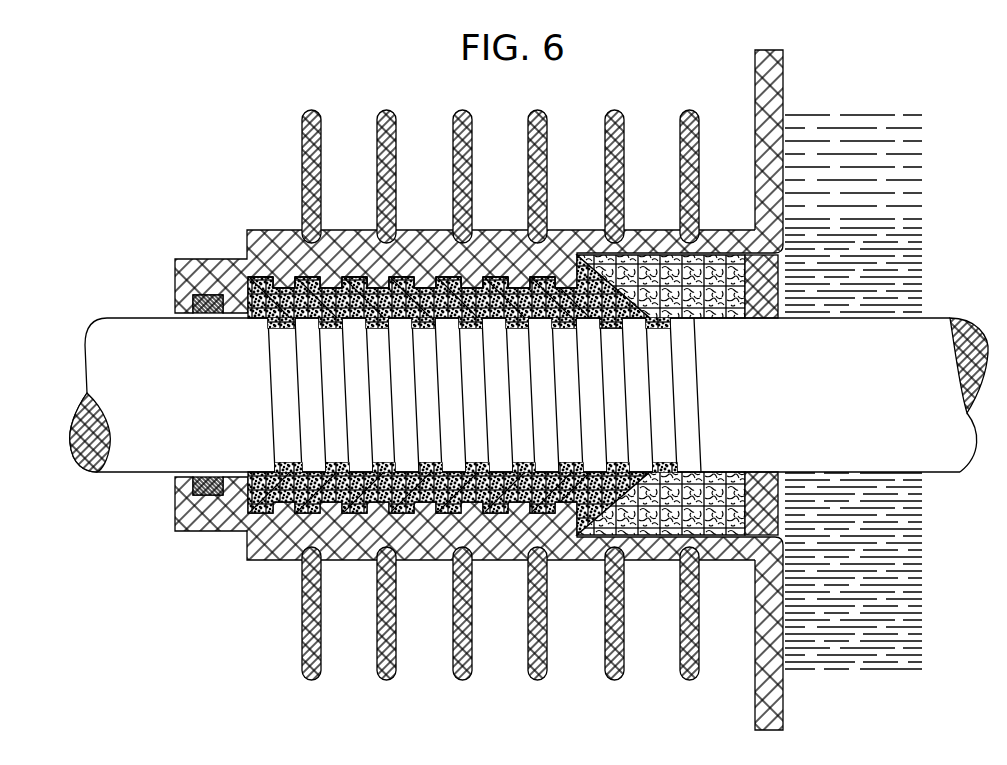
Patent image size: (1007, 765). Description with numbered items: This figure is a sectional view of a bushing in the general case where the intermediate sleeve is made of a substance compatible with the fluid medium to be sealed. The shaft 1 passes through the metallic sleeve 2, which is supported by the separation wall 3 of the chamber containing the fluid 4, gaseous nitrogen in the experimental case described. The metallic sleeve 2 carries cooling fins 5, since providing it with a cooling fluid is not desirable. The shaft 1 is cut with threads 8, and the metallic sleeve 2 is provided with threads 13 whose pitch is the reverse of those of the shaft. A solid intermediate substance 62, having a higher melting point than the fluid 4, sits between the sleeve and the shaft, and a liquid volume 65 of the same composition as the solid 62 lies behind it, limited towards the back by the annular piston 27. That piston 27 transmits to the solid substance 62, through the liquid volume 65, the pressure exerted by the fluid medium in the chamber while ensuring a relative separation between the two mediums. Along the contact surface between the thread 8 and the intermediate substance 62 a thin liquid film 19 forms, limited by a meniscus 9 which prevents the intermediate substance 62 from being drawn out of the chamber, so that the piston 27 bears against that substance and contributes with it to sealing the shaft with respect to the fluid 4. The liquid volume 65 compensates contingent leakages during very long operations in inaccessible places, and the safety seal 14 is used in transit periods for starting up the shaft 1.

The shaft 1 is at (911, 358).
The metallic sleeve 2 is at (655, 247).
The separation wall 3 is at (768, 112).
The fluid 4 is at (878, 170).
The cooling fins 5 is at (386, 143).
The threads 8 is at (610, 332).
The meniscus 9 is at (286, 318).
The threads 13 is at (422, 277).
The safety seal 14 is at (203, 295).
The liquid film 19 is at (475, 280).
The annular piston 27 is at (731, 253).
The intermediate substance 62 is at (597, 253).
The liquid volume 65 is at (712, 537).